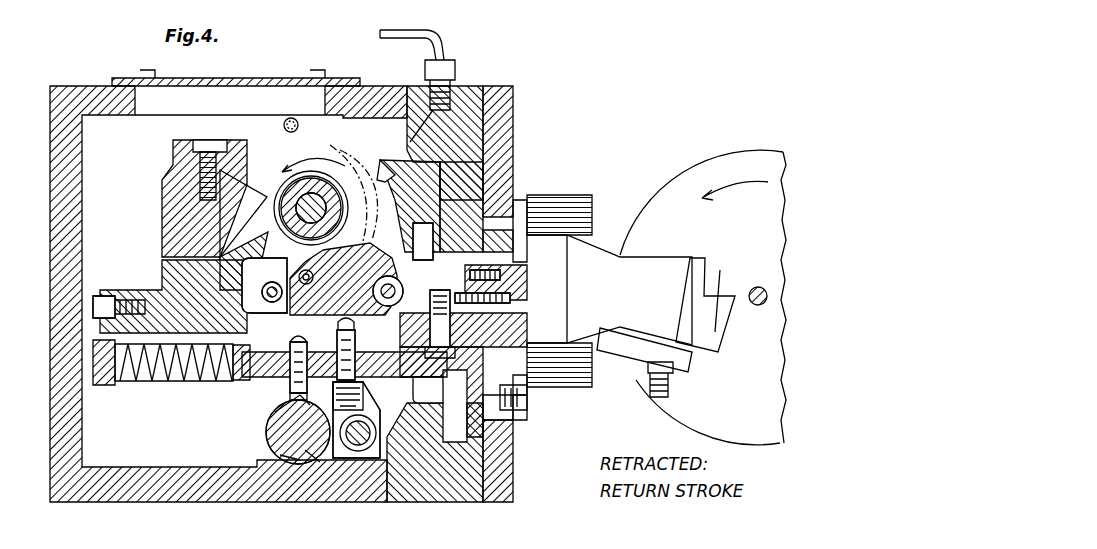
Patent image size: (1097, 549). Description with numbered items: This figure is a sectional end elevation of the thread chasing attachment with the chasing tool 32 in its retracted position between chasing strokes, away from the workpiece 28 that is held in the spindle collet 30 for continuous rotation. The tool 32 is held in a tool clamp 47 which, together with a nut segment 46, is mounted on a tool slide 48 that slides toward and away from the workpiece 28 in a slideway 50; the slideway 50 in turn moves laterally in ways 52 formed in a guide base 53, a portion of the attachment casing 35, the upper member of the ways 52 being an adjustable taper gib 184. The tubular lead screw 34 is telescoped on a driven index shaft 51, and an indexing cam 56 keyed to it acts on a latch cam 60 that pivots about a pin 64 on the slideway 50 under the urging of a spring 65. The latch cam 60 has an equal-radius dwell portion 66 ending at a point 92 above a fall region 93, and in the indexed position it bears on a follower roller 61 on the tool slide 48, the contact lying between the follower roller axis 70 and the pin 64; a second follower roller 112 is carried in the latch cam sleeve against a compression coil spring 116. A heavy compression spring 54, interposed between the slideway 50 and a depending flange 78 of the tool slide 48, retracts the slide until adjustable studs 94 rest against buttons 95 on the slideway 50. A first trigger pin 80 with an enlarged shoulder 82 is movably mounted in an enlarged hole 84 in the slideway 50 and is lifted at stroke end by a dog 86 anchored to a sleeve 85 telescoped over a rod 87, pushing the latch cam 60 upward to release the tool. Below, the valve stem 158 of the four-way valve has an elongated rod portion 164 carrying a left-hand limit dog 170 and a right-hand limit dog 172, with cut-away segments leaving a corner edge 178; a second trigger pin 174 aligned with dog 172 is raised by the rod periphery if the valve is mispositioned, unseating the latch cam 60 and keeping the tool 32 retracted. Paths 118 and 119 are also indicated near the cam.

The workpiece 28 is at (757, 286).
The spindle collet 30 is at (726, 152).
The chasing tool 32 is at (714, 288).
The lead screw 34 is at (284, 176).
The attachment casing 35 is at (44, 83).
The nut segment 46 is at (216, 150).
The tool clamp 47 is at (656, 300).
The tool slide 48 is at (535, 322).
The slideway 50 is at (518, 207).
The index shaft 51 is at (314, 205).
The ways 52 is at (486, 212).
The guide base 53 is at (472, 88).
The heavy compression spring 54 is at (130, 382).
The indexing cam 56 is at (315, 168).
The latch cam 60 is at (355, 268).
The follower roller 61 is at (500, 256).
The pin 64 is at (272, 284).
The spring 65 is at (238, 234).
The dwell portion 66 is at (380, 250).
The follower roller axis 70 is at (505, 275).
The depending flange 78 is at (102, 296).
The first trigger pin 80 is at (340, 341).
The enlarged shoulder 82 is at (380, 378).
The enlarged hole 84 is at (303, 452).
The sleeve 85 is at (350, 434).
The dog 86 is at (345, 403).
The rod 87 is at (362, 437).
The point 92 is at (413, 240).
The fall region 93 is at (390, 276).
The adjustable studs 94 is at (522, 398).
The buttons 95 is at (520, 420).
The second latch cam follower roller 112 is at (290, 318).
The compression coil spring 116 is at (300, 273).
The cam path 118 is at (362, 175).
The cam path 119 is at (360, 150).
The valve stem 158 is at (285, 456).
The elongated rod portion 164 is at (290, 443).
The left-hand limit dog 170 is at (278, 430).
The right-hand limit dog 172 is at (278, 395).
The second trigger pin 174 is at (280, 385).
The corner edge 178 is at (283, 418).
The taper gib 184 is at (490, 172).